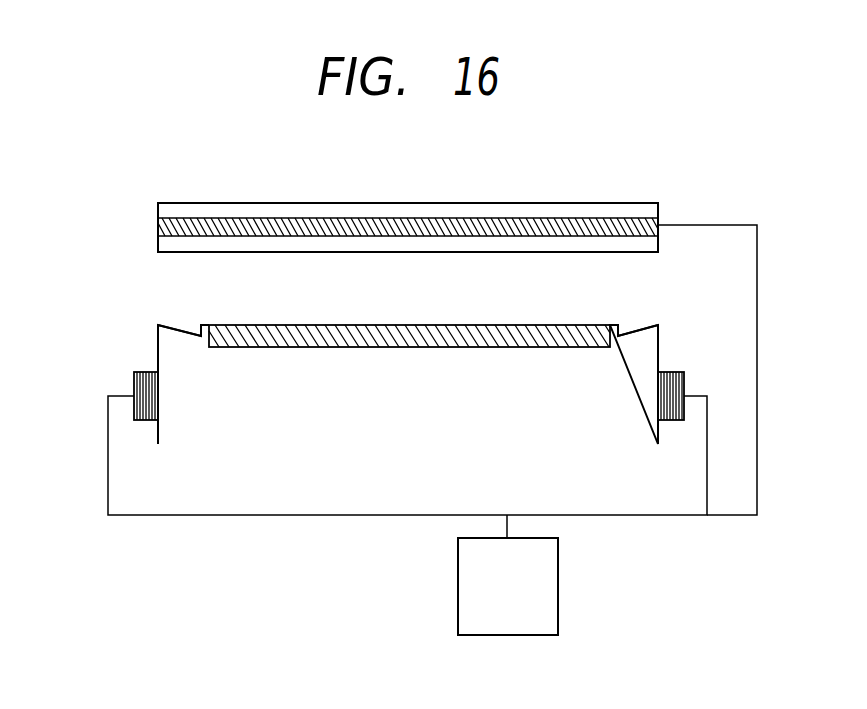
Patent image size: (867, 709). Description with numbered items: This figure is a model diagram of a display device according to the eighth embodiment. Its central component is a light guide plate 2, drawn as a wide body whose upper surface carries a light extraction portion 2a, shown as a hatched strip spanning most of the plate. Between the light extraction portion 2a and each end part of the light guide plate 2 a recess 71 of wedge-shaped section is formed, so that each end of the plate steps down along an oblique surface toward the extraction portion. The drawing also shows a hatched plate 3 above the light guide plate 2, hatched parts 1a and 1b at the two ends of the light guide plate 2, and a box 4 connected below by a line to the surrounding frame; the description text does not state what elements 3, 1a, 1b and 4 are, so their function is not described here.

The heating plate 3 is at (562, 208).
The light guide plate 2 is at (229, 422).
The light extraction portion 2a is at (398, 337).
The recess 71 is at (182, 322).
The bearing 1a is at (141, 388).
The bearing 1b is at (672, 386).
The power supply 4 is at (487, 613).